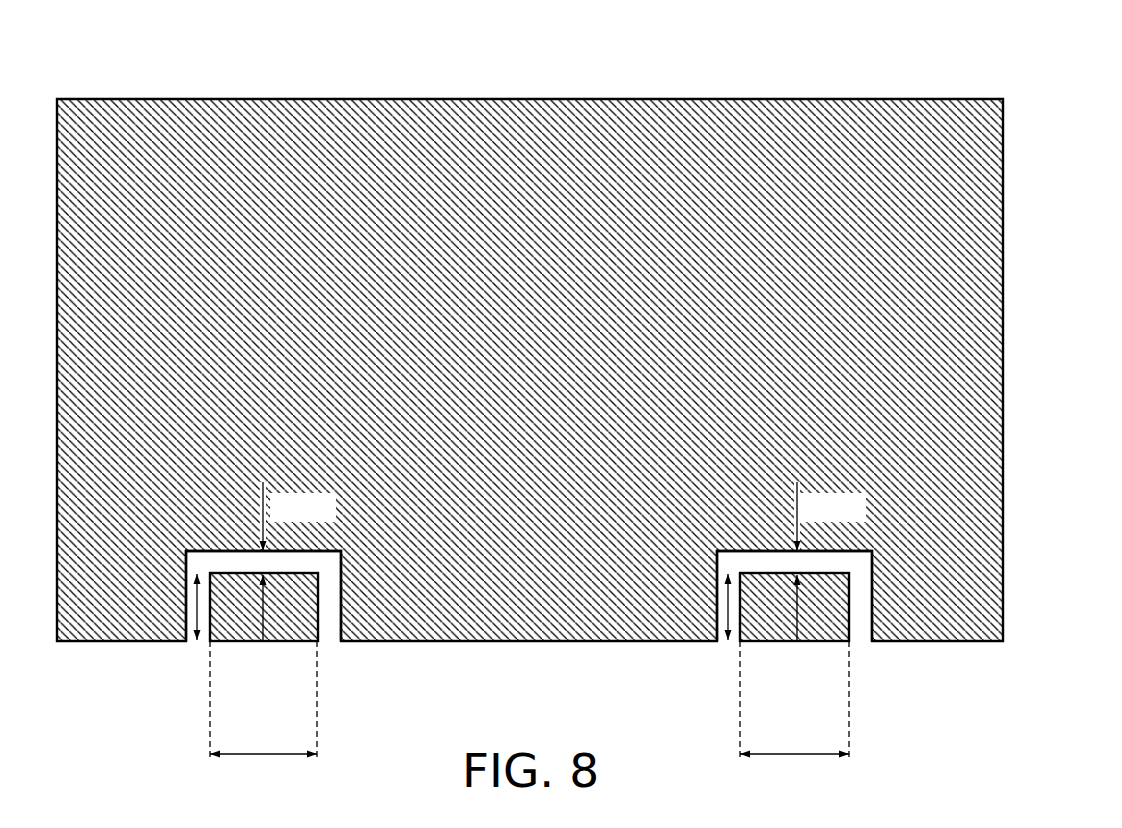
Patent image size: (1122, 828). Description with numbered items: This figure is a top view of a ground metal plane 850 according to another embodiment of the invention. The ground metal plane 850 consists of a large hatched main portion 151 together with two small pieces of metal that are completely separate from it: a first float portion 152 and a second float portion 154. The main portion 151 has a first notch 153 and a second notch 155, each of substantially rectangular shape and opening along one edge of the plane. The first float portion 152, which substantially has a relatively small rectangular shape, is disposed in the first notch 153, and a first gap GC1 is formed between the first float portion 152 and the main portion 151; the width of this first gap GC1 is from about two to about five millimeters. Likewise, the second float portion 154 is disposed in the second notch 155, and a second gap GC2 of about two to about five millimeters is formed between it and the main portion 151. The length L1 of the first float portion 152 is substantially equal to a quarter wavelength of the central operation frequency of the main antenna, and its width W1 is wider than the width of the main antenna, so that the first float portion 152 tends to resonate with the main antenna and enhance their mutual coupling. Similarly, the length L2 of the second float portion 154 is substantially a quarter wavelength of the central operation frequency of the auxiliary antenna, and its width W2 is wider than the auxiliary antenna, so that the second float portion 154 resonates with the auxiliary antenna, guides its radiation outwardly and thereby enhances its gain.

The ground metal plane 850 is at (578, 388).
The main portion 151 is at (1003, 365).
The first float portion 152 is at (813, 628).
The first notch 153 is at (859, 618).
The second float portion 154 is at (283, 628).
The second notch 155 is at (329, 618).
The first gap GC1 is at (830, 561).
The second gap GC2 is at (298, 561).
The width of the first float portion W1 is at (728, 608).
The width of the second float portion W2 is at (197, 608).
The length of the first float portion L1 is at (794, 699).
The length of the second float portion L2 is at (263, 699).